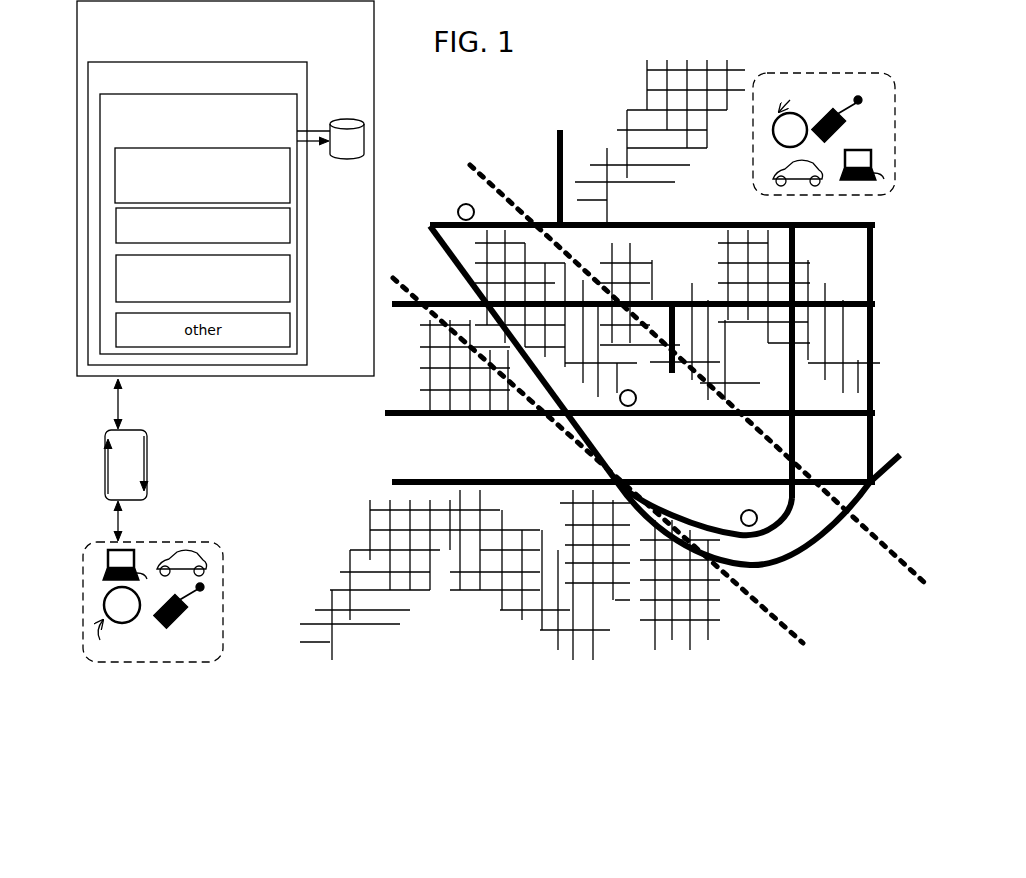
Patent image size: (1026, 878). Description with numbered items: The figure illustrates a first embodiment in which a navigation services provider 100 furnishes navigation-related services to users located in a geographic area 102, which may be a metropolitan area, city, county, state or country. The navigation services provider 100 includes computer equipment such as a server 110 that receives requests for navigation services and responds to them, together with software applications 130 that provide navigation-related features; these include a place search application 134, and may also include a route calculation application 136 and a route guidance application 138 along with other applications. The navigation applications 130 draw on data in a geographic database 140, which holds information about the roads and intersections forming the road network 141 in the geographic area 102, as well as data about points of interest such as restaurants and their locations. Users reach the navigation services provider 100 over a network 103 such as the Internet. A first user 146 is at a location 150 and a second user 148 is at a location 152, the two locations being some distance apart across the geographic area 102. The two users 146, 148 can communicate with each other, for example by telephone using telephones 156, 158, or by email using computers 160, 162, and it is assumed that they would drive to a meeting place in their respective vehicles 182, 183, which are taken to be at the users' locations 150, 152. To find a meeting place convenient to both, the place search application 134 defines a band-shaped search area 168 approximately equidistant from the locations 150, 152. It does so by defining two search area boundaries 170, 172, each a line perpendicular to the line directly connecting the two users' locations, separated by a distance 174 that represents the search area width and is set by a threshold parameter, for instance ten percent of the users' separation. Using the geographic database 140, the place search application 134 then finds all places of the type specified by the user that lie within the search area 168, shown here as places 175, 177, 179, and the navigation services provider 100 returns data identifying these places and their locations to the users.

The navigation services provider 100 is at (225, 188).
The server 110 is at (197, 213).
The software applications 130 is at (198, 224).
The place search application 134 is at (202, 175).
The route calculation application 136 is at (203, 225).
The route guidance application 138 is at (203, 278).
The geographic database 140 is at (356, 118).
The network 103 is at (158, 448).
The location of first user 150 is at (222, 545).
The computer 160 is at (104, 561).
The vehicle 182 is at (188, 545).
The first user 146 is at (122, 605).
The telephone 156 is at (174, 621).
The location of second user 152 is at (830, 68).
The second user 148 is at (790, 130).
The telephone 158 is at (840, 134).
The computer 162 is at (875, 160).
The vehicle 183 is at (770, 167).
The road network 141 is at (880, 275).
The geographic area 102 is at (833, 447).
The place 175 is at (460, 195).
The place 177 is at (640, 398).
The place 179 is at (745, 505).
The search area boundary 170 is at (873, 525).
The search area boundary 172 is at (787, 642).
The distance 174 is at (852, 528).
The search area 168 is at (862, 603).